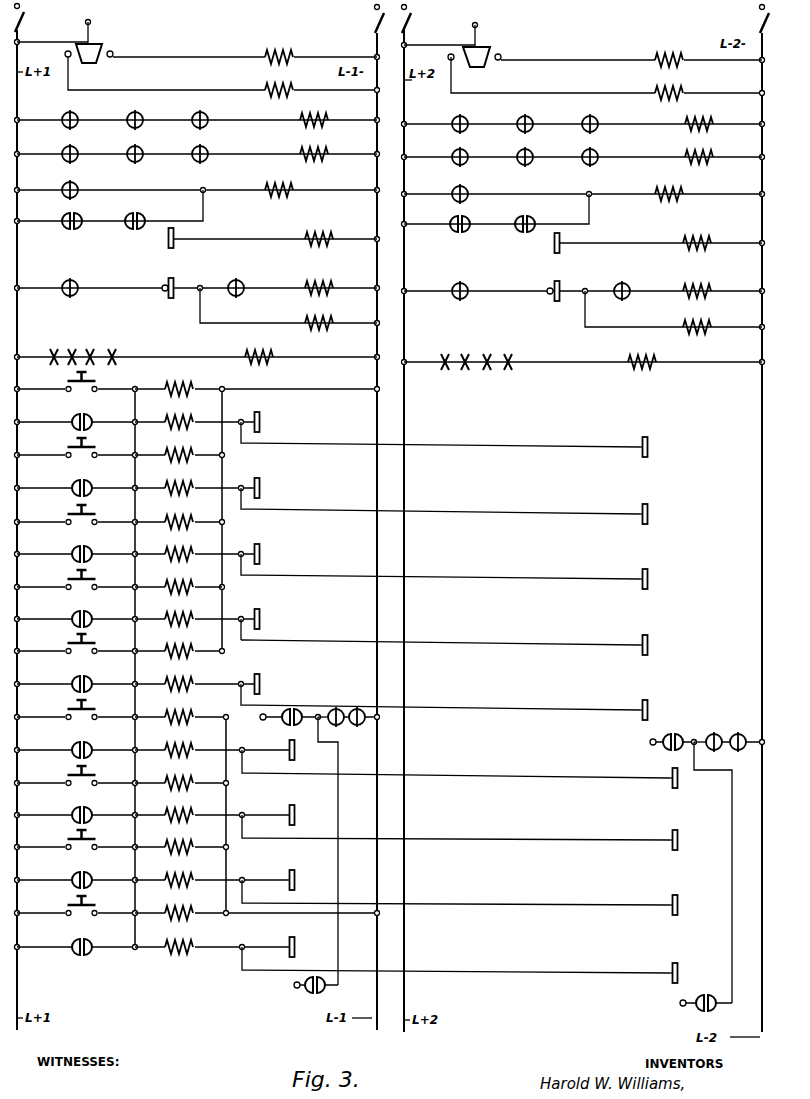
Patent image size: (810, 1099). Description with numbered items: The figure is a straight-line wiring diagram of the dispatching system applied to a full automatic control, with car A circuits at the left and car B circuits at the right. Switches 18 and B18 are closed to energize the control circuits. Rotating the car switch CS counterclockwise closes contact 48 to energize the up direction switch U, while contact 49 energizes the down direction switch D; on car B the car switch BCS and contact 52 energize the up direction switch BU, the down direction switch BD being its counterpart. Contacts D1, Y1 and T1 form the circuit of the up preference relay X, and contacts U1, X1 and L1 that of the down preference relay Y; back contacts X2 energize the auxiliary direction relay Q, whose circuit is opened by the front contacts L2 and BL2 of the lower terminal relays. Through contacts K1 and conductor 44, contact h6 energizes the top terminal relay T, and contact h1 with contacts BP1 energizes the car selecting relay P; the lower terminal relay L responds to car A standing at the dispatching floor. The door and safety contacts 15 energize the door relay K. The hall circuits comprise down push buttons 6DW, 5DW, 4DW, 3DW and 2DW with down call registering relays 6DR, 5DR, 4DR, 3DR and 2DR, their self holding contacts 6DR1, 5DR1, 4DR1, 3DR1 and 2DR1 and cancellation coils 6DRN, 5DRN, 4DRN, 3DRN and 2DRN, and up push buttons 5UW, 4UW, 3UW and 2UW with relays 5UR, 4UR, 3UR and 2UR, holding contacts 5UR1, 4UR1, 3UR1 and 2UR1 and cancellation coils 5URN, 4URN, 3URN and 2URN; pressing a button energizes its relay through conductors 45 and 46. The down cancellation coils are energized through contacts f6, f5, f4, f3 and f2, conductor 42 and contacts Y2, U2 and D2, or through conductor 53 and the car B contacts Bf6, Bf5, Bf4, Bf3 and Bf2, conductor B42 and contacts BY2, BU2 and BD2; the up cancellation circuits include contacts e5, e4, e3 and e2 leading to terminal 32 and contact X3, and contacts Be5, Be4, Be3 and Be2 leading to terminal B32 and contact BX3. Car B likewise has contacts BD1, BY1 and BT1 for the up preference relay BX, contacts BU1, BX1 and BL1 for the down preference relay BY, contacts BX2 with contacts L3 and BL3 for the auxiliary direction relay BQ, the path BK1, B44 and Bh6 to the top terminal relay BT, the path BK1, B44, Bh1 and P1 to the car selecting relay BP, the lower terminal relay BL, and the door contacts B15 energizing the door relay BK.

The main line switch 18 is at (27, 22).
The main line switch of second car B18 is at (412, 25).
The car switch CS is at (92, 24).
The car switch of second car BCS is at (479, 27).
The car switch up contact 48 is at (116, 47).
The car switch down contact 49 is at (64, 55).
The car switch contact of second car 52 is at (499, 53).
The up direction relay U is at (290, 38).
The down direction relay D is at (270, 84).
The up direction relay of second car BU is at (678, 42).
The down direction relay of second car BD is at (678, 86).
The down relay contact D1 is at (81, 110).
The Y relay contact Y1 is at (146, 110).
The T relay contact T1 is at (197, 113).
The X relay X is at (312, 110).
The up relay contact U1 is at (76, 147).
The X relay contact X1 is at (141, 147).
The L relay contact L1 is at (206, 147).
The Y relay Y is at (318, 144).
The X relay contact X2 is at (76, 183).
The Q relay Q is at (266, 182).
The L relay contact L2 is at (78, 214).
The second car L relay contact BL2 is at (141, 214).
The top floor selector contact h6 is at (173, 247).
The T relay T is at (329, 232).
The K relay contact K1 is at (76, 294).
The selector contact terminal 44 is at (164, 292).
The bottom floor selector contact h1 is at (176, 268).
The second car P relay contact BP1 is at (248, 276).
The P relay P is at (324, 280).
The L relay L is at (322, 312).
The door safety contacts 15 is at (112, 345).
The K relay K is at (255, 350).
The call circuit conductor 46 is at (322, 390).
The call circuit conductor 45 is at (226, 580).
The interconnecting conductor 53 is at (313, 576).
The sixth floor down call button 6DW is at (76, 381).
The sixth floor down call relay 6DR is at (178, 382).
The sixth floor down call relay contact 6DR1 is at (76, 415).
The sixth floor down call relay holding coil 6DRN is at (188, 415).
The fifth floor down call button 5DW is at (76, 447).
The fifth floor down call relay 5DR is at (178, 448).
The fifth floor down call relay contact 5DR1 is at (76, 481).
The fifth floor down call relay holding coil 5DRN is at (188, 481).
The fourth floor down call button 4DW is at (76, 514).
The fourth floor down call relay 4DR is at (178, 515).
The fourth floor down call relay contact 4DR1 is at (76, 547).
The fourth floor down call relay holding coil 4DRN is at (188, 547).
The third floor down call button 3DW is at (76, 579).
The third floor down call relay 3DR is at (178, 580).
The third floor down call relay contact 3DR1 is at (76, 612).
The third floor down call relay holding coil 3DRN is at (188, 612).
The second floor down call button 2DW is at (76, 643).
The second floor down call relay 2DR is at (178, 644).
The second floor down call relay contact 2DR1 is at (76, 677).
The second floor down call relay holding coil 2DRN is at (188, 677).
The fifth floor up call button 5UW is at (76, 709).
The fifth floor up call relay 5UR is at (180, 710).
The fifth floor up call relay contact 5UR1 is at (76, 743).
The fifth floor up call relay holding coil 5URN is at (188, 743).
The fourth floor up call button 4UW is at (76, 775).
The fourth floor up call relay 4UR is at (180, 776).
The fourth floor up call relay contact 4UR1 is at (76, 808).
The fourth floor up call relay holding coil 4URN is at (188, 808).
The third floor up call button 3UW is at (76, 839).
The third floor up call relay 3UR is at (180, 840).
The third floor up call relay contact 3UR1 is at (76, 873).
The third floor up call relay holding coil 3URN is at (188, 873).
The second floor up call button 2UW is at (76, 905).
The second floor up call relay 2UR is at (256, 906).
The second floor up call relay contact 2UR1 is at (76, 940).
The second floor up call relay holding coil 2URN is at (188, 940).
The sixth floor down selector contact f6 is at (259, 421).
The fifth floor down selector contact f5 is at (259, 487).
The fourth floor down selector contact f4 is at (259, 553).
The third floor down selector contact f3 is at (259, 618).
The second floor down selector contact f2 is at (259, 683).
The second car sixth floor down selector contact Bf6 is at (658, 447).
The second car fifth floor down selector contact Bf5 is at (658, 514).
The second car fourth floor down selector contact Bf4 is at (658, 579).
The second car third floor down selector contact Bf3 is at (658, 645).
The second car second floor down selector contact Bf2 is at (647, 706).
The fifth floor up selector contact e5 is at (294, 757).
The fourth floor up selector contact e4 is at (294, 815).
The third floor up selector contact e3 is at (294, 880).
The second floor up selector contact e2 is at (294, 947).
The second car fifth floor up selector contact Be5 is at (677, 783).
The second car fourth floor up selector contact Be4 is at (677, 838).
The second car third floor up selector contact Be3 is at (677, 911).
The second car second floor up selector contact Be2 is at (677, 968).
The selector brush terminal 42 is at (259, 717).
The Y relay contact Y2 is at (290, 727).
The up relay contact U2 is at (328, 706).
The down relay contact D2 is at (361, 727).
The selector brush terminal 32 is at (293, 986).
The X relay contact X3 is at (312, 994).
The second car selector brush terminal B42 is at (649, 742).
The second car Y relay contact BY2 is at (670, 728).
The second car up relay contact BU2 is at (712, 732).
The second car down relay contact BD2 is at (742, 752).
The second car selector brush terminal B32 is at (679, 1004).
The second car X relay contact BX3 is at (703, 1013).
The second car down relay contact BD1 is at (472, 114).
The second car Y relay contact BY1 is at (538, 114).
The second car T relay contact BT1 is at (588, 117).
The second car X relay BX is at (701, 115).
The second car up relay contact BU1 is at (472, 148).
The second car X relay contact BX1 is at (538, 148).
The second car L relay contact BL1 is at (602, 148).
The second car Y relay BY is at (707, 144).
The second car X relay contact BX2 is at (466, 187).
The second car Q relay BQ is at (662, 190).
The L relay contact L3 is at (466, 217).
The second car L relay contact BL3 is at (531, 217).
The second car top floor selector contact Bh6 is at (553, 250).
The second car T relay BT is at (710, 235).
The second car K relay contact BK1 is at (474, 273).
The second car selector contact terminal B44 is at (547, 290).
The second car bottom floor selector contact Bh1 is at (565, 276).
The P relay contact P1 is at (634, 273).
The second car P relay BP is at (710, 274).
The second car L relay BL is at (716, 306).
The second car door safety contacts B15 is at (498, 351).
The second car K relay BK is at (640, 355).